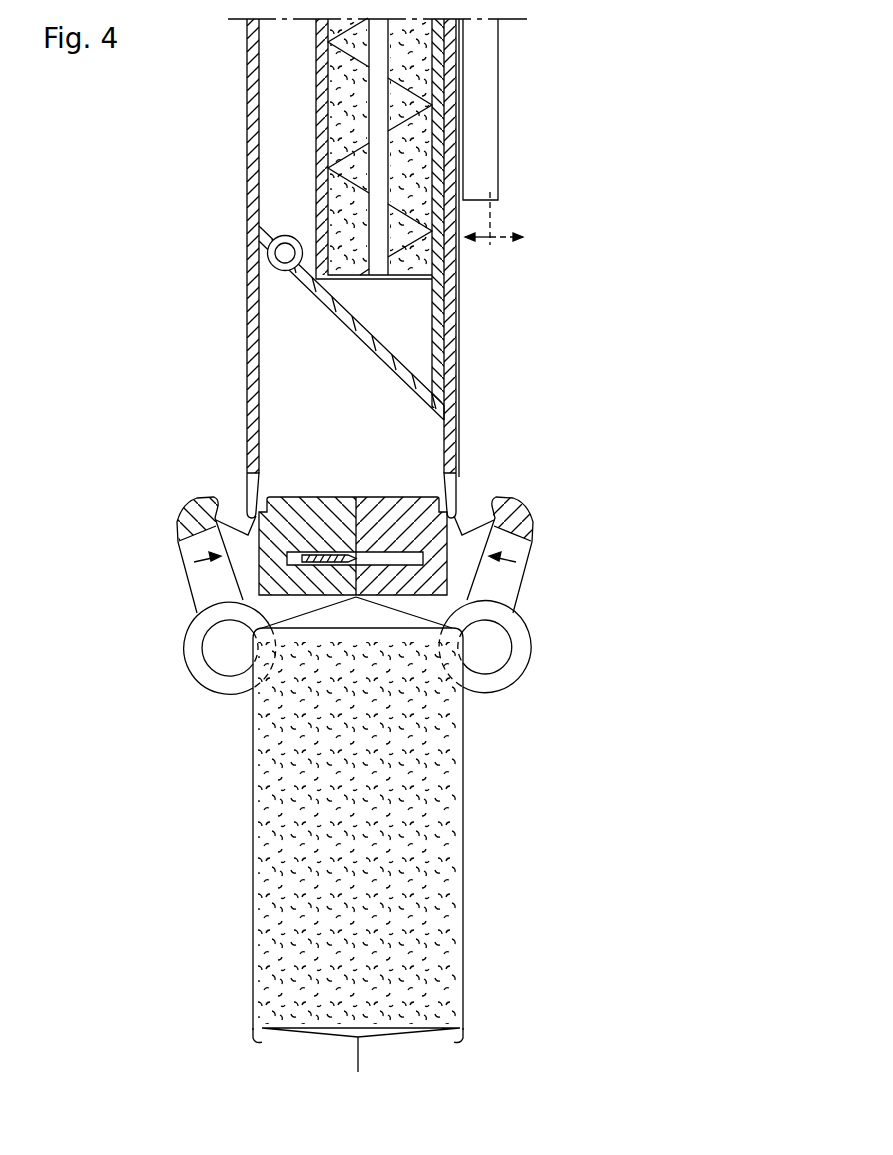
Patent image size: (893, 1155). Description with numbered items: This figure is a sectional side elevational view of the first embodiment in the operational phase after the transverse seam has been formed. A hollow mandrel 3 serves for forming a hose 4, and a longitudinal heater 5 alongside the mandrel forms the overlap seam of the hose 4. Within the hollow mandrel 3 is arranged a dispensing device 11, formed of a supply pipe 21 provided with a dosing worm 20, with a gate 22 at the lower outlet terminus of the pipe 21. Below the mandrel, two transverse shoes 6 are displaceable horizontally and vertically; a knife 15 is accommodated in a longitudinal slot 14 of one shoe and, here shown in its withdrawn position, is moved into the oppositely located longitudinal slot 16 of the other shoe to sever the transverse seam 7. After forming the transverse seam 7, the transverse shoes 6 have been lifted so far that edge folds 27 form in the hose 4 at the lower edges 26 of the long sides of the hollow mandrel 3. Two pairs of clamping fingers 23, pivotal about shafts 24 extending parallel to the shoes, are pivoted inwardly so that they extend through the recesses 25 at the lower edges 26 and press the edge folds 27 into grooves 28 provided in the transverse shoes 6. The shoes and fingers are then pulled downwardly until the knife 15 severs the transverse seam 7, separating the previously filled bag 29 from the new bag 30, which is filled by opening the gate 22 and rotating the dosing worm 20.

The hollow mandrel 3 is at (251, 105).
The hose 4 is at (249, 405).
The longitudinal heater 5 is at (484, 131).
The transverse shoes 6 is at (400, 510).
The transverse seam 7 is at (359, 517).
The dispensing device 11 is at (283, 226).
The longitudinal slot 14 is at (292, 557).
The knife 15 is at (330, 555).
The longitudinal slot 16 is at (410, 555).
The dosing worm 20 is at (407, 243).
The supply pipe 21 is at (320, 190).
The gate 22 is at (322, 298).
The clamping fingers 23 is at (198, 503).
The shafts 24 is at (205, 652).
The recesses 25 is at (252, 486).
The lower edges 26 is at (213, 533).
The edge folds 27 is at (185, 558).
The grooves 28 is at (258, 500).
The filled bag 29 is at (463, 853).
The new bag 30 is at (458, 392).